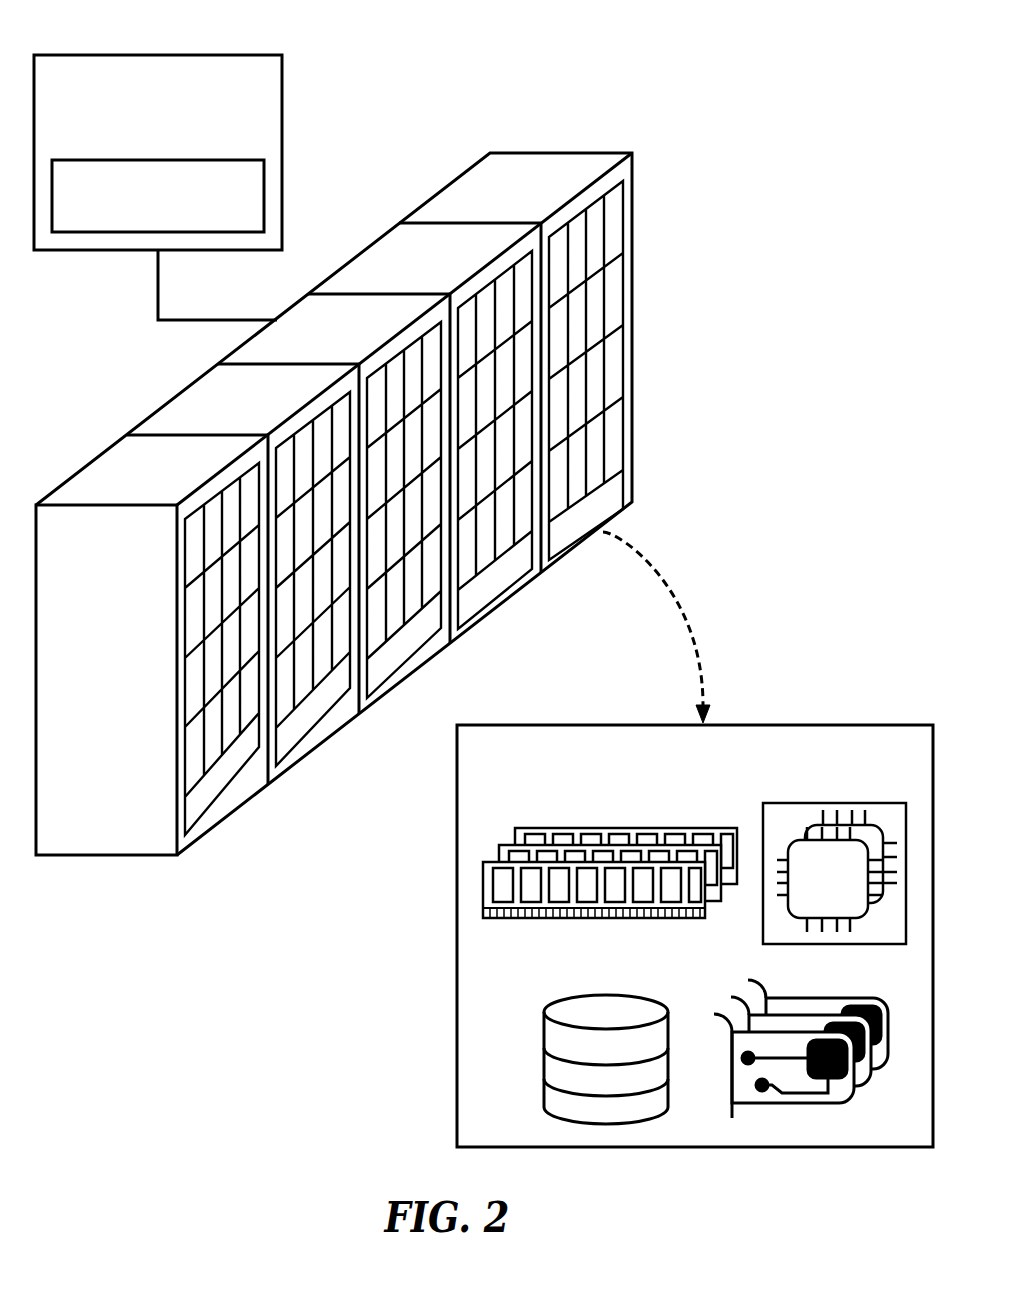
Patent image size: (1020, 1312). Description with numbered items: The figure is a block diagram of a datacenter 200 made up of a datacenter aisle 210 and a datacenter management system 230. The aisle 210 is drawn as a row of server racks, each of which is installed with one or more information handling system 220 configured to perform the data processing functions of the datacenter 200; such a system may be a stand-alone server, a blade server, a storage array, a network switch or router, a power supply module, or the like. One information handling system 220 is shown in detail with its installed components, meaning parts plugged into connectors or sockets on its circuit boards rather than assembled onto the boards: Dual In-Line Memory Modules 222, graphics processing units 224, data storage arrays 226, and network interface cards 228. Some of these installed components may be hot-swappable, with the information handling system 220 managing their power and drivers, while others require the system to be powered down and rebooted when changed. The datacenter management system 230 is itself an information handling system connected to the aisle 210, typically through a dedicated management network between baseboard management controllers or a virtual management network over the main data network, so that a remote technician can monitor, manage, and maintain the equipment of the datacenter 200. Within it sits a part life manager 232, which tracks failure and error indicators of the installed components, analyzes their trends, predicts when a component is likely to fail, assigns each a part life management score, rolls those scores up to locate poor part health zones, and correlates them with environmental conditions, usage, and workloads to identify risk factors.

The datacenter 200 is at (77, 1151).
The datacenter aisle 210 is at (504, 152).
The information handling system 220 is at (469, 725).
The Dual In-Line Memory Modules (DIMMs) 222 is at (528, 830).
The graphics processing units (GPUs) 224 is at (776, 803).
The data storage arrays 226 is at (560, 1001).
The network interface cards (NICs) 228 is at (839, 998).
The datacenter management system 230 is at (149, 169).
The part life manager 232 is at (73, 160).